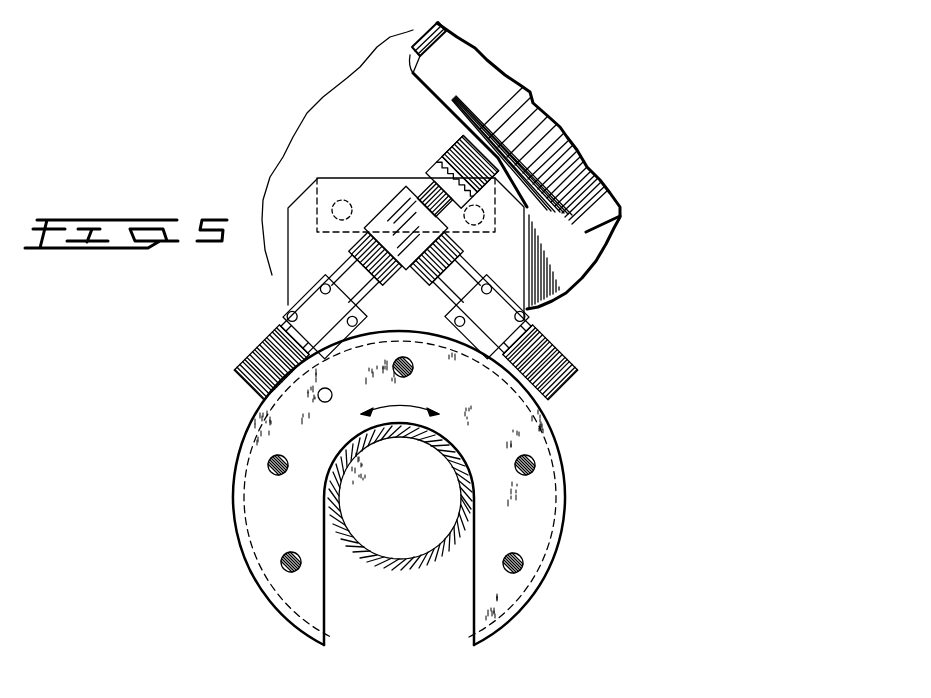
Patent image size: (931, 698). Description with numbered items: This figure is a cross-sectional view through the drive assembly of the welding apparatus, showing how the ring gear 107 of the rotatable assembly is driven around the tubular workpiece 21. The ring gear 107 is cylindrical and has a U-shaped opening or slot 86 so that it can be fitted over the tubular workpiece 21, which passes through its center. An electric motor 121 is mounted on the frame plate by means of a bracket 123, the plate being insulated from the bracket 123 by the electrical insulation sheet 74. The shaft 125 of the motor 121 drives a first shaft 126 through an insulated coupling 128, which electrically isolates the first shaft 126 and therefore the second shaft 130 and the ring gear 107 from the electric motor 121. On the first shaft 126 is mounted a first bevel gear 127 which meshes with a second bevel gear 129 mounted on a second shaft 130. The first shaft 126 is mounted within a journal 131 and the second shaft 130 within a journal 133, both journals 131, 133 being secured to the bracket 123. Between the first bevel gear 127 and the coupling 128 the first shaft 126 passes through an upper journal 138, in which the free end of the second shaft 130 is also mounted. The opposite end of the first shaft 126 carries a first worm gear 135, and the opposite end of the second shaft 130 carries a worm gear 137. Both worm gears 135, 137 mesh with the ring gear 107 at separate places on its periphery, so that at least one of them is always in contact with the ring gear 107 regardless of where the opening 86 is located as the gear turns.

The electrical insulation sheet 74 is at (337, 97).
The electric motor 121 is at (527, 110).
The bracket 123 is at (302, 193).
The shaft of the motor 125 is at (453, 147).
The insulated coupling 128 is at (430, 167).
The upper journal 138 is at (387, 217).
The first bevel gear 127 is at (348, 250).
The second shaft 130 is at (458, 244).
The first shaft 126 is at (316, 305).
The second bevel gear 129 is at (462, 258).
The journal 131 is at (310, 325).
The journal 133 is at (503, 313).
The first worm gear 135 is at (243, 378).
The worm gear 137 is at (555, 357).
The ring gear 107 is at (567, 482).
The tubular workpiece 21 is at (372, 568).
The U-shaped opening or slot 86 is at (402, 622).